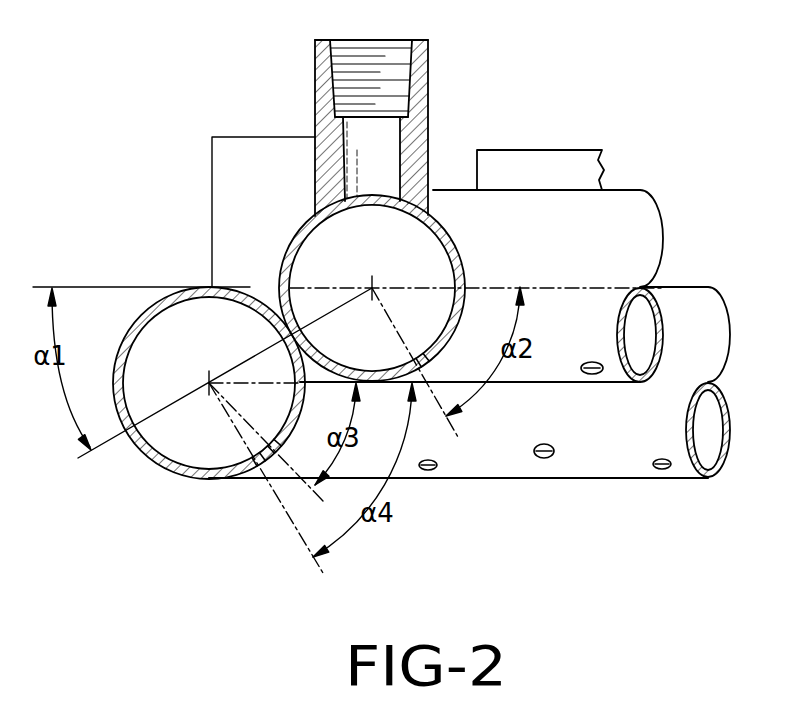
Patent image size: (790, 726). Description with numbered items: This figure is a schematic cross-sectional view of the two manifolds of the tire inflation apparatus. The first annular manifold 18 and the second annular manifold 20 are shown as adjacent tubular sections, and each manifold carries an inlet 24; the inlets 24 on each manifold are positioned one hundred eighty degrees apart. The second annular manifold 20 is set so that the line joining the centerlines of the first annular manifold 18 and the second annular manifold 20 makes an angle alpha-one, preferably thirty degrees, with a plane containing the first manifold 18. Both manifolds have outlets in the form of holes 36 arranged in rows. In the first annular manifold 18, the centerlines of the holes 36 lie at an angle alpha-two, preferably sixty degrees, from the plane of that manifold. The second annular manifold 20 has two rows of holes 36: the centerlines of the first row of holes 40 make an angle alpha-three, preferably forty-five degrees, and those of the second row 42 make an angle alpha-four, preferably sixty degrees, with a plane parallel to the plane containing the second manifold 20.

The first annular manifold 18 is at (288, 242).
The second annular manifold 20 is at (173, 468).
The inlet 24 is at (382, 48).
The holes 36 is at (424, 363).
The first row of holes 40 is at (279, 450).
The second row of holes 42 is at (262, 465).